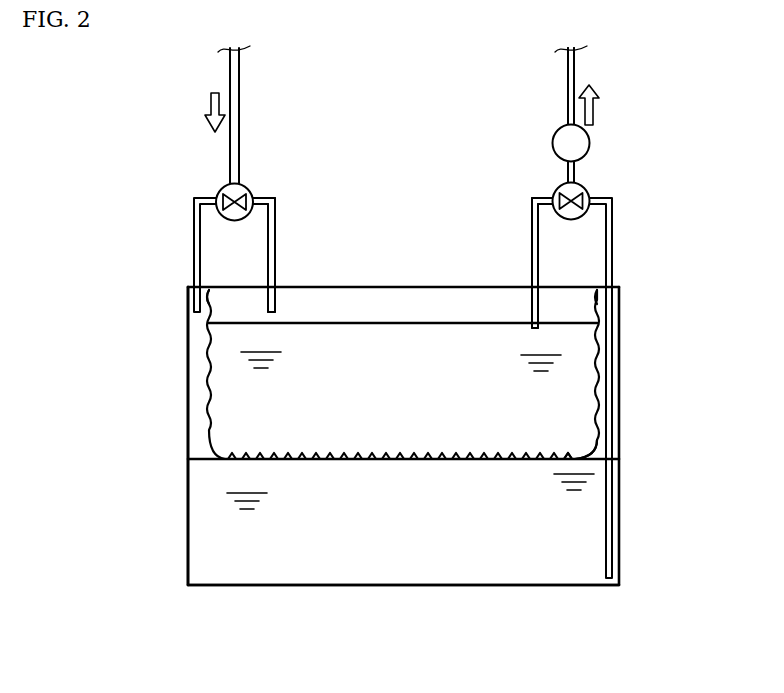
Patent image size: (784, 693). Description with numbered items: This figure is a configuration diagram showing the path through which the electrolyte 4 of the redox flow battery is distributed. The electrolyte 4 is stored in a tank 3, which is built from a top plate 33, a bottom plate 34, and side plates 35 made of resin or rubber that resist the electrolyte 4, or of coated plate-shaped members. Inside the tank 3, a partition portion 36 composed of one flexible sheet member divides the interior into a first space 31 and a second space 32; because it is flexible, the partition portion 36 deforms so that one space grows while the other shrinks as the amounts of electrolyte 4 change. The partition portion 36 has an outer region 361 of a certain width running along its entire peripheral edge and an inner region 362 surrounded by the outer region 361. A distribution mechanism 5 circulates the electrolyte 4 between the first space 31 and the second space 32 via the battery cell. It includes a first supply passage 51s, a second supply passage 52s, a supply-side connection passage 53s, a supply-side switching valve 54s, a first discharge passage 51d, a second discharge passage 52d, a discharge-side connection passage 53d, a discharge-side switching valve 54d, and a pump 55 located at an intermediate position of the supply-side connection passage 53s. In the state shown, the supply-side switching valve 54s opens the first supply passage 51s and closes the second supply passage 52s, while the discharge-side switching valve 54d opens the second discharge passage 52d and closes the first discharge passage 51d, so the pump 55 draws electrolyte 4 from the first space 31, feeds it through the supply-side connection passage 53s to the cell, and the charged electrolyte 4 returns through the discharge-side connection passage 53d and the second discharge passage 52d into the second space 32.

The tank 3 is at (633, 399).
The electrolyte 4 is at (326, 344).
The distribution mechanism 5 is at (535, 104).
The first space 31 is at (374, 310).
The second space 32 is at (198, 423).
The top plate 33 is at (413, 287).
The bottom plate 34 is at (315, 587).
The side plates 35 is at (188, 490).
The partition portion 36 is at (200, 348).
The outer region 361 is at (214, 296).
The inner region 362 is at (605, 440).
The first discharge passage 51d is at (273, 212).
The first supply passage 51s is at (531, 270).
The second discharge passage 52d is at (194, 215).
The second supply passage 52s is at (608, 343).
The discharge-side connection passage 53d is at (230, 78).
The supply-side connection passage 53s is at (575, 78).
The discharge-side switching valve 54d is at (218, 195).
The supply-side switching valve 54s is at (586, 193).
The pump 55 is at (588, 140).